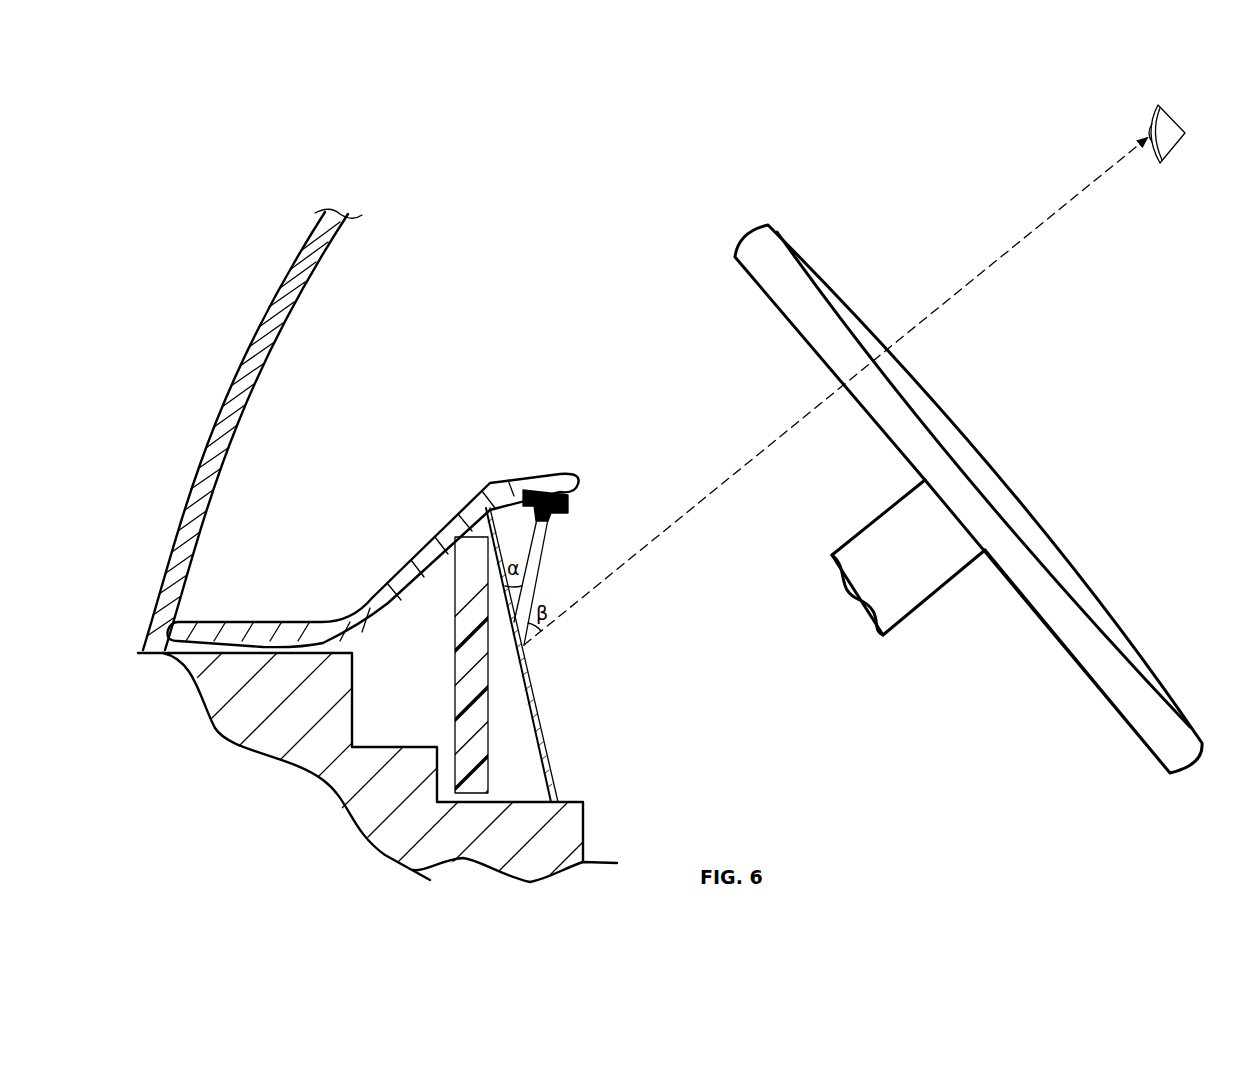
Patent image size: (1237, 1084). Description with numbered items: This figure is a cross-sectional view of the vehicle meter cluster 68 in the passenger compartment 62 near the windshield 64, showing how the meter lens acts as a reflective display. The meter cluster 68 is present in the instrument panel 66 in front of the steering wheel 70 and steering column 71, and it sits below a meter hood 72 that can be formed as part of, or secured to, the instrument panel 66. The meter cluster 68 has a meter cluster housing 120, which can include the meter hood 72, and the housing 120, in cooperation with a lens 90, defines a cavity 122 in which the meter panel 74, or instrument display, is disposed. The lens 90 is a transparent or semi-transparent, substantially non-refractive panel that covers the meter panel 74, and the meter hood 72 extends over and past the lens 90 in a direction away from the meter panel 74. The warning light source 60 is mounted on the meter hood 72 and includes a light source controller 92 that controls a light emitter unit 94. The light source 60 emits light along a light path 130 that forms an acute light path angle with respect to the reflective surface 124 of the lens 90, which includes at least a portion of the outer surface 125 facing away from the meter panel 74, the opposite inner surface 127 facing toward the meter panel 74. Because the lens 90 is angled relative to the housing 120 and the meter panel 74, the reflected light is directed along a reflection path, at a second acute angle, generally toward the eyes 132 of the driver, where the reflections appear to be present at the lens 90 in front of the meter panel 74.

The warning light source 60 is at (580, 498).
The passenger compartment 62 is at (330, 298).
The windshield 64 is at (248, 390).
The instrument panel 66 is at (233, 630).
The meter cluster 68 is at (635, 722).
The steering wheel 70 is at (755, 223).
The steering column 71 is at (860, 530).
The meter hood 72 is at (553, 484).
The meter panel 74 is at (480, 746).
The lens 90 is at (552, 780).
The light source controller 92 is at (527, 492).
The light emitter unit 94 is at (544, 518).
The meter cluster housing 120 is at (402, 747).
The cavity 122 is at (420, 655).
The reflective surface 124 is at (528, 671).
The outer surface 125 is at (510, 728).
The inner surface 127 is at (531, 712).
The light path 130 is at (541, 563).
The eyes 132 is at (1173, 136).